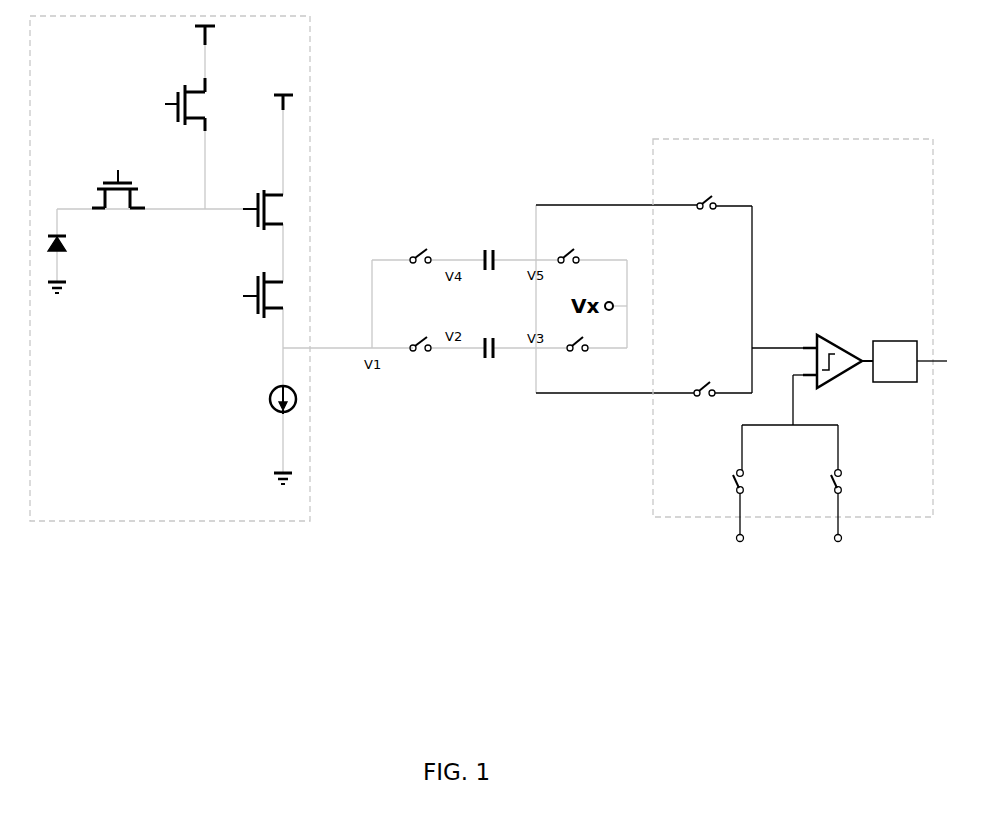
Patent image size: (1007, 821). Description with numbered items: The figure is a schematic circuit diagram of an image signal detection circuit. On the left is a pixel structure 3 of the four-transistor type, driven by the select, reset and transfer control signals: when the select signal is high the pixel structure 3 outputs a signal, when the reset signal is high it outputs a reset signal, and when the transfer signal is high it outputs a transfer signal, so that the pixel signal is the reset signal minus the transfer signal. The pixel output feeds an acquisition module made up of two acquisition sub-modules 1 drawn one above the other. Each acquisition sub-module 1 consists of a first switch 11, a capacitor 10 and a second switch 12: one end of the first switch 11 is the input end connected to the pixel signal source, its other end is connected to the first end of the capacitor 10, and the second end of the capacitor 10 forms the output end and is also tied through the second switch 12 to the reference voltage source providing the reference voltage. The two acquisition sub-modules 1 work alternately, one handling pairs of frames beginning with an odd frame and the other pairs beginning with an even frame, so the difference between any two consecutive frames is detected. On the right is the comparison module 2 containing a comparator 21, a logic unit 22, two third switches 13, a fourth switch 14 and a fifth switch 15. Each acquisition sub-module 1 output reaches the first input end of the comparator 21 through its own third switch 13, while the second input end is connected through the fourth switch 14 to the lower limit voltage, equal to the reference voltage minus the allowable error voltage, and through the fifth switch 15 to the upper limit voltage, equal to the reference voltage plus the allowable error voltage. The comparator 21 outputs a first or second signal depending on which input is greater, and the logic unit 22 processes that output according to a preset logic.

The acquisition sub-module 1 is at (408, 141).
The comparison module 2 is at (777, 182).
The pixel structure 3 is at (272, 505).
The capacitor 10 is at (488, 250).
The first switch 11 is at (425, 252).
The second switch 12 is at (570, 252).
The third switch 13 is at (703, 197).
The fourth switch 14 is at (734, 486).
The fifth switch 15 is at (832, 492).
The comparator 21 is at (826, 340).
The logic unit 22 is at (896, 345).